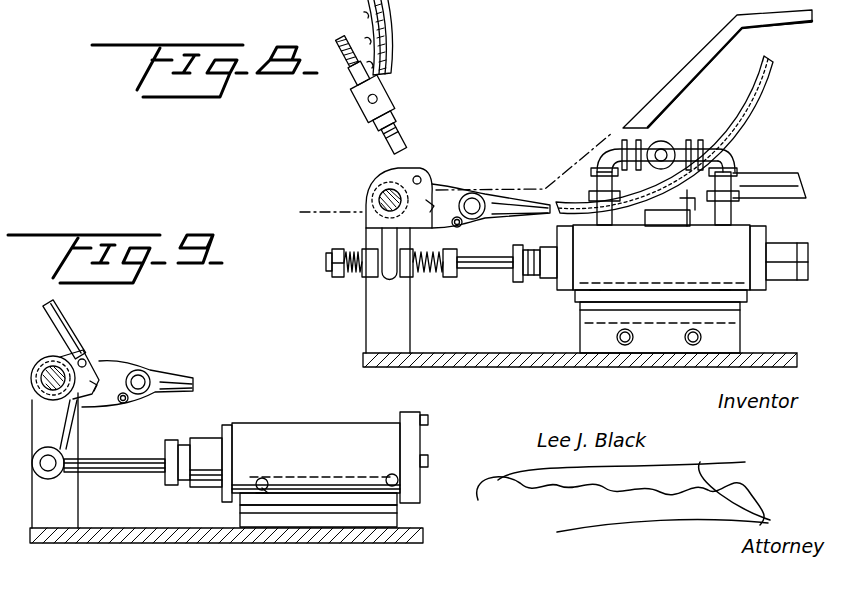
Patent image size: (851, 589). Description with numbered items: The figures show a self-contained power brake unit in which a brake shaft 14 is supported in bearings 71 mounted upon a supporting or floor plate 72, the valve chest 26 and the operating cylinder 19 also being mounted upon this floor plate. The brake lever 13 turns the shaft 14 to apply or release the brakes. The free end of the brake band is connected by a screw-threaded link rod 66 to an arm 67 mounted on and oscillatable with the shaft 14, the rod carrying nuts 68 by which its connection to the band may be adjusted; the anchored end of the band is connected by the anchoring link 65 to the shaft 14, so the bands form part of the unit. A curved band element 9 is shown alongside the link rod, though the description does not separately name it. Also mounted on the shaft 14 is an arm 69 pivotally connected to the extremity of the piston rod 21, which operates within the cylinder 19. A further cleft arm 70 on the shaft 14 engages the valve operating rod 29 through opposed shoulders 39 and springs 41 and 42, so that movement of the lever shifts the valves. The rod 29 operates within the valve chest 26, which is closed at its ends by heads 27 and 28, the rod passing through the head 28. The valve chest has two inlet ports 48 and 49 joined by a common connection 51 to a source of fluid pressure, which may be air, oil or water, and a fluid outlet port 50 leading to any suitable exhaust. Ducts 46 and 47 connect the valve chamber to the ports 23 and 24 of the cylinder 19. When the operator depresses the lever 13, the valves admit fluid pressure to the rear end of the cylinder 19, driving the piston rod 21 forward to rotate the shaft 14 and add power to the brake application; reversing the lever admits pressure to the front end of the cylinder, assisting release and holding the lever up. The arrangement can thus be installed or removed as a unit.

In FIG. 8, the curved rail 9 is at (413, 0).
In FIG. 8, the brake lever 13 is at (697, 57).
In FIG. 8, the brake shaft 14 is at (378, 200).
In FIG. 9, the brake shaft 14 is at (50, 364).
In FIG. 9, the cylinder 19 is at (305, 435).
In FIG. 9, the piston rod 21 is at (140, 467).
In FIG. 9, the port 23 is at (269, 470).
In FIG. 9, the port 24 is at (393, 474).
In FIG. 8, the valve chest 26 is at (682, 263).
In FIG. 8, the head 27 is at (753, 297).
In FIG. 8, the head 28 is at (538, 288).
In FIG. 8, the valve operating rod 29 is at (492, 270).
In FIG. 8, the opposed shoulders 39 is at (400, 280).
In FIG. 8, the spring 41 is at (350, 278).
In FIG. 8, the spring 42 is at (428, 280).
In FIG. 8, the duct 46 is at (625, 345).
In FIG. 8, the duct 47 is at (693, 345).
In FIG. 8, the inlet port 48 is at (605, 218).
In FIG. 8, the inlet port 49 is at (722, 215).
In FIG. 8, the fluid outlet port 50 is at (767, 180).
In FIG. 8, the common connection 51 is at (673, 138).
In FIG. 8, the anchoring link 65 is at (453, 185).
In FIG. 9, the anchoring link 65 is at (128, 365).
In FIG. 8, the screw-threaded link rod 66 is at (397, 139).
In FIG. 9, the screw-threaded link rod 66 is at (70, 322).
In FIG. 8, the arm 67 is at (383, 177).
In FIG. 9, the arm 67 is at (90, 357).
In FIG. 8, the nuts 68 is at (395, 108).
In FIG. 9, the arm 69 is at (62, 435).
In FIG. 8, the cleft arm 70 is at (383, 282).
In FIG. 8, the bearings 71 is at (397, 340).
In FIG. 9, the bearings 71 is at (68, 515).
In FIG. 8, the floor plate 72 is at (497, 357).
In FIG. 9, the floor plate 72 is at (176, 533).